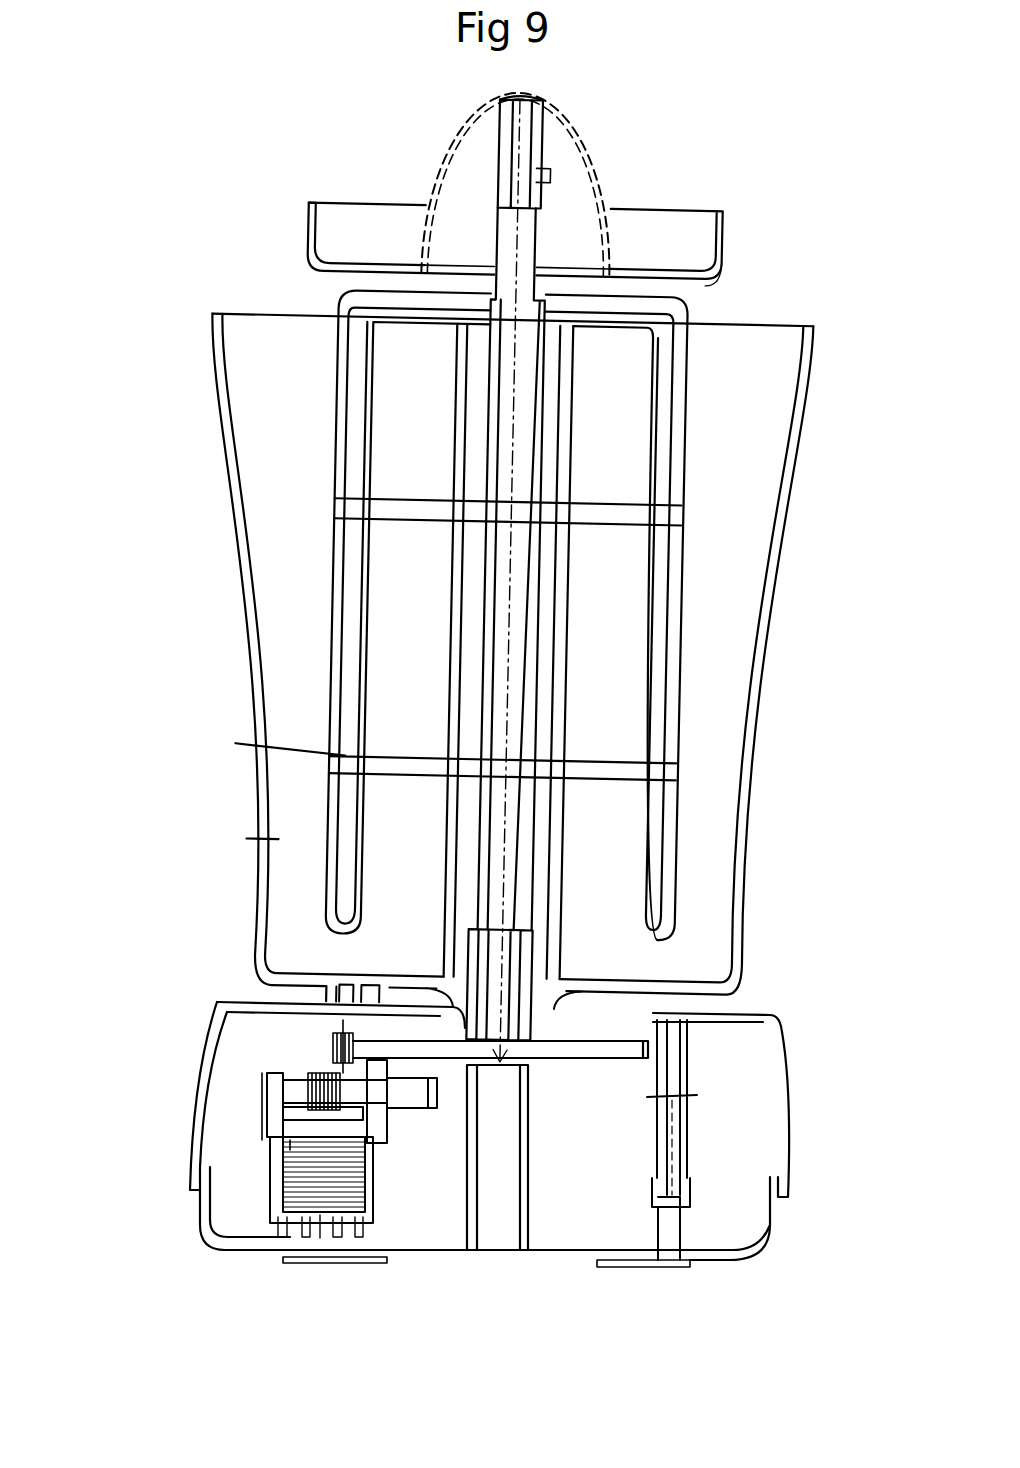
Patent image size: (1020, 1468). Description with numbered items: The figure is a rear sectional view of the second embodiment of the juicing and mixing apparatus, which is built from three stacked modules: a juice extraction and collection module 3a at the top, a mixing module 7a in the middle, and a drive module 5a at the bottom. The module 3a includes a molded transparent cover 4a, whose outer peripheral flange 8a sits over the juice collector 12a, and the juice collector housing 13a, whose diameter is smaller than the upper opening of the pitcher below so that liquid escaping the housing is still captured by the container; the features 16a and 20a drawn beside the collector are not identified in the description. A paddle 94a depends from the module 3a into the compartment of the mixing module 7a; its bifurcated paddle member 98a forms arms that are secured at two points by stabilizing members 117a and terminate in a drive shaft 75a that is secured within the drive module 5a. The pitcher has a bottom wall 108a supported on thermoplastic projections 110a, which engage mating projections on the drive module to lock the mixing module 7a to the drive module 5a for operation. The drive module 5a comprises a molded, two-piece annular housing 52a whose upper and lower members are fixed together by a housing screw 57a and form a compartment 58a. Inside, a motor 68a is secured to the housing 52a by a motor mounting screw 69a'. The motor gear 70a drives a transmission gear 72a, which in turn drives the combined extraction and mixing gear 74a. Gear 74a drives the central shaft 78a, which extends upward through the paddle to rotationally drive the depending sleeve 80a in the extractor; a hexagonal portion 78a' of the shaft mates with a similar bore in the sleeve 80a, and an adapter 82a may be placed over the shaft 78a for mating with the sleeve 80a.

The juice extraction and collection module 3a is at (763, 250).
The cover 4a is at (452, 142).
The drive module 5a is at (757, 1108).
The mixing module 7a is at (812, 677).
The outer peripheral flange 8a is at (410, 263).
The juice collector 12a is at (327, 253).
The juice collector housing 13a is at (313, 213).
The cup 16a is at (682, 262).
The rim 20a is at (727, 280).
The annular housing 52a is at (745, 1045).
The housing screw 57a is at (690, 1203).
The compartment 58a is at (562, 1198).
The motor 68a is at (302, 1200).
The motor bracket 69a' is at (178, 1163).
The motor gear 70a is at (300, 1095).
The transmission gear 72a is at (335, 1085).
The combined extraction and mixing gear 74a is at (563, 1052).
The drive shaft 75a is at (530, 930).
The shaft 78a is at (654, 581).
The hexagonal portion 78a' is at (594, 152).
The depending sleeve 80a is at (713, 158).
The adapter 82a is at (527, 100).
The paddle 94a is at (283, 476).
The bifurcated paddle member 98a is at (683, 593).
The bottom wall 108a is at (315, 970).
The thermoplastic projections 110a is at (272, 1003).
The stabilizing members 117a is at (603, 500).